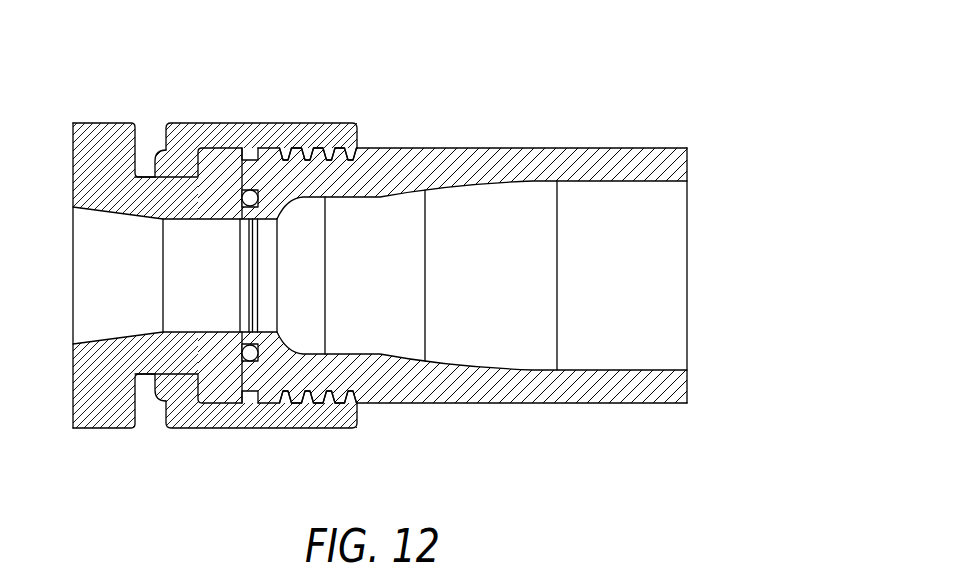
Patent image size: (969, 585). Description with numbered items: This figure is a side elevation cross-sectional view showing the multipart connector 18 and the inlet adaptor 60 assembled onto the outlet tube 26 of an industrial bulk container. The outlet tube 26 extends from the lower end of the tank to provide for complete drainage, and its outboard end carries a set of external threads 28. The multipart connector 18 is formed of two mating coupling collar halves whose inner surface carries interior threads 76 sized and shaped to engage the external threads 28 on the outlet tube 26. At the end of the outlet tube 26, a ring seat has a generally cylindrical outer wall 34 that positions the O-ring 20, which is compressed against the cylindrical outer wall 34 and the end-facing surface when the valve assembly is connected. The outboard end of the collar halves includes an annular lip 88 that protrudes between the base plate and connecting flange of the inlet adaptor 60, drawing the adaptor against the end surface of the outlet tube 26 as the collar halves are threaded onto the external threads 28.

The multipart connector 18 is at (363, 440).
The O-ring 20 is at (250, 190).
The outlet tube 26 is at (557, 90).
The external threads 28 is at (316, 160).
The cylindrical outer wall 34 is at (442, 148).
The inlet adaptor 60 is at (129, 57).
The interior threads 76 is at (337, 148).
The annular lip 88 is at (186, 404).